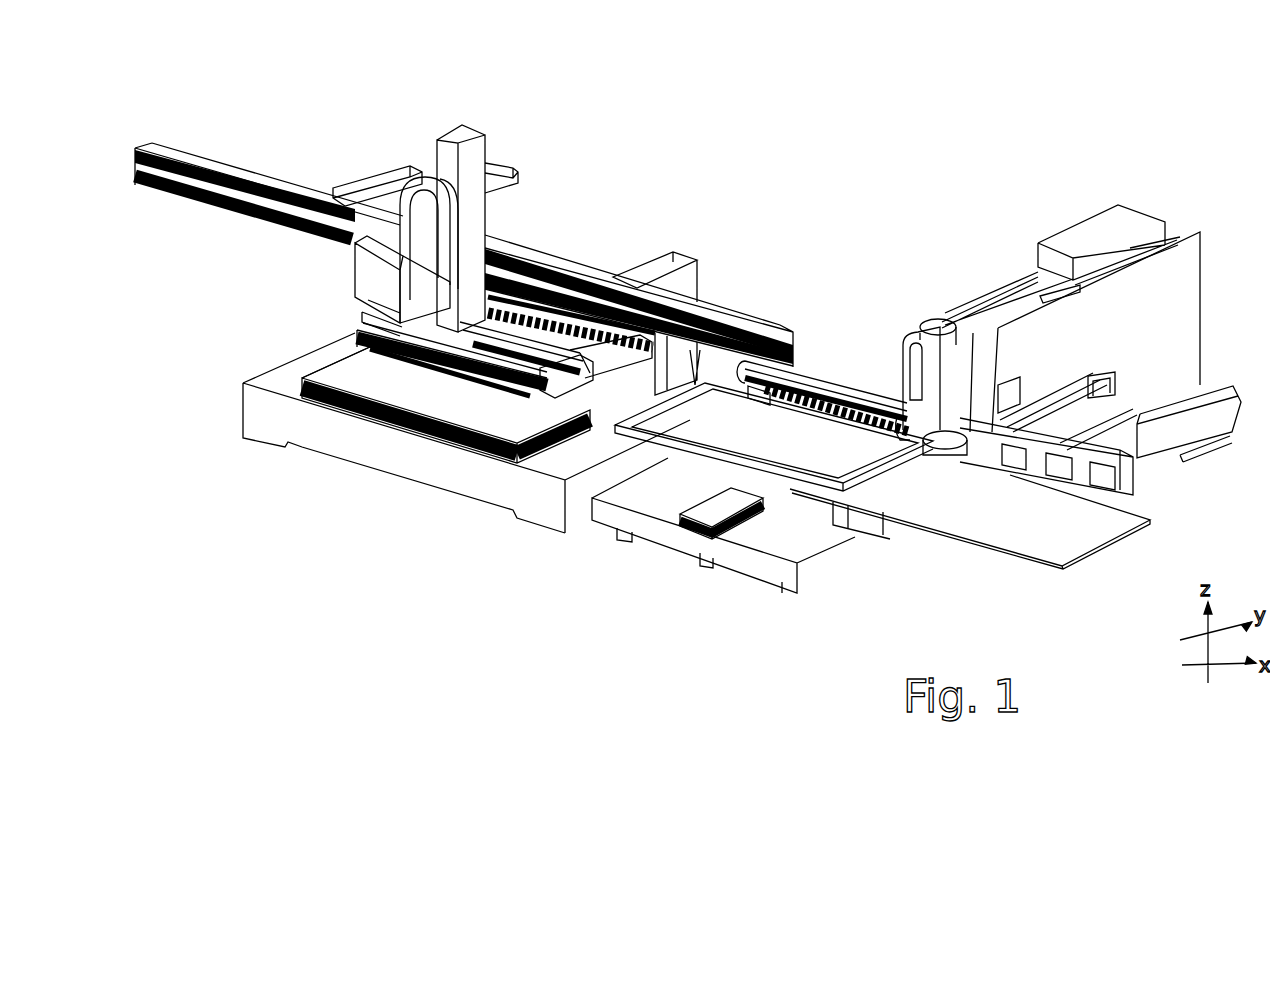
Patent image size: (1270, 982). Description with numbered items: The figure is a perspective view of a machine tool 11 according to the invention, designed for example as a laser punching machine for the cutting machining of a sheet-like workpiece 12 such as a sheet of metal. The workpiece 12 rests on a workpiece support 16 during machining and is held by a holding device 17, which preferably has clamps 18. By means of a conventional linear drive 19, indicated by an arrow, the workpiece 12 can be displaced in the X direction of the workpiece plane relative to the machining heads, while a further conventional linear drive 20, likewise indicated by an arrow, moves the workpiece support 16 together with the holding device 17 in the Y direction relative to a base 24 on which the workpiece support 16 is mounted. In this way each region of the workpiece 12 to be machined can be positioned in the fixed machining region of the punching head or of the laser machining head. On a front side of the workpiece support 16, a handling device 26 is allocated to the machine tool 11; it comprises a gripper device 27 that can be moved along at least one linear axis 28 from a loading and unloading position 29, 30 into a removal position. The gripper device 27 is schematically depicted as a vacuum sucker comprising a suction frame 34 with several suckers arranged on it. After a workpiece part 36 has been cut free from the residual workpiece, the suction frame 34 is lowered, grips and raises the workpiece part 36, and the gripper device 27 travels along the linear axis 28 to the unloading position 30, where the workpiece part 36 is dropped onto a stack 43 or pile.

The machine tool 11 is at (903, 172).
The workpiece 12 is at (450, 405).
The workpiece support 16 is at (1068, 533).
The holding device 17 is at (803, 363).
The clamps 18 is at (828, 418).
The linear drive 19 is at (893, 378).
The linear drive 20 is at (1152, 440).
The base 24 is at (1152, 465).
The handling device 26 is at (548, 200).
The gripper device 27 is at (322, 293).
The linear axis 28 is at (582, 260).
The loading position 29 is at (466, 433).
The unloading position 30 is at (412, 375).
The suction frame 34 is at (524, 405).
The workpiece part 36 is at (703, 512).
The stack 43 is at (750, 523).